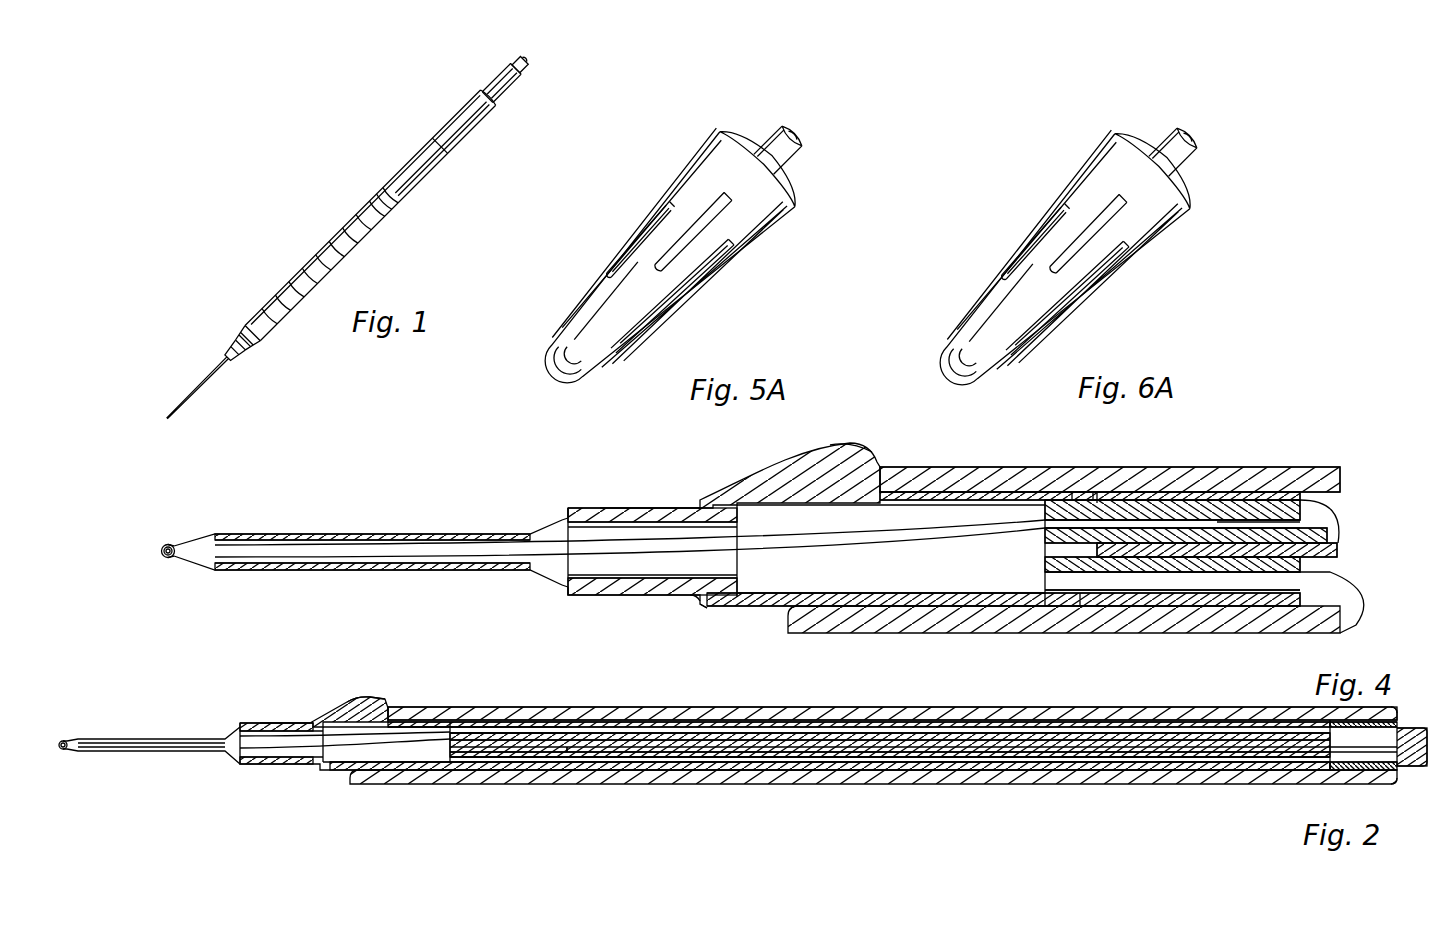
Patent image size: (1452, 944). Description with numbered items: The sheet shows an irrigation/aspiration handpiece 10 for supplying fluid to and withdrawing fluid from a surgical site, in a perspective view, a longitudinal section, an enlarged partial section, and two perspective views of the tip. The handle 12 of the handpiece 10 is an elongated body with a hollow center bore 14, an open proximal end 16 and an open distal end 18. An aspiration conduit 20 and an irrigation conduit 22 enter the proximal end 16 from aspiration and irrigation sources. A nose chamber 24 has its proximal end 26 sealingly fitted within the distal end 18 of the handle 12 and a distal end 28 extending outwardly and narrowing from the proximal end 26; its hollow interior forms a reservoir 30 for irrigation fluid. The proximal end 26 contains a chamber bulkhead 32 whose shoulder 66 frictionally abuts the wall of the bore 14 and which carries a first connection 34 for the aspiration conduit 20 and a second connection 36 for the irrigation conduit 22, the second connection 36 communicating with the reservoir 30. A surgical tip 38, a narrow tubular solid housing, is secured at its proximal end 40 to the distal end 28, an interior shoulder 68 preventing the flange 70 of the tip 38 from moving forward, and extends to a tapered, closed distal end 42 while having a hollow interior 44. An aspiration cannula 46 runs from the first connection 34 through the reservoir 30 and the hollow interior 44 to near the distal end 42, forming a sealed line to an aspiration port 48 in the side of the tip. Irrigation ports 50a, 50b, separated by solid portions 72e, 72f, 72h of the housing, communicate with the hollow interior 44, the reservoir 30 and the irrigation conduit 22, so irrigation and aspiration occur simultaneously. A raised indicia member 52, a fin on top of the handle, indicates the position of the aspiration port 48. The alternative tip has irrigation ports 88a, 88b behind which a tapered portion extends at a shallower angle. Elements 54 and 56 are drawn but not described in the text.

In FIG. 1, the irrigation/aspiration handpiece 10 is at (322, 213).
In FIG. 2, the irrigation/aspiration handpiece 10 is at (628, 684).
In FIG. 1, the handle 12 is at (292, 257).
In FIG. 4, the hollow center bore 14 is at (962, 605).
In FIG. 2, the hollow center bore 14 is at (655, 722).
In FIG. 1, the proximal end 16 is at (495, 103).
In FIG. 2, the proximal end 16 is at (1393, 784).
In FIG. 1, the distal end 18 is at (243, 362).
In FIG. 4, the distal end 18 is at (785, 630).
In FIG. 2, the distal end 18 is at (322, 793).
In FIG. 1, the aspiration conduit 20 is at (528, 62).
In FIG. 4, the aspiration conduit 20 is at (1290, 495).
In FIG. 2, the aspiration conduit 20 is at (1003, 735).
In FIG. 1, the irrigation conduit 22 is at (505, 91).
In FIG. 4, the irrigation conduit 22 is at (1348, 548).
In FIG. 2, the irrigation conduit 22 is at (1050, 740).
In FIG. 1, the nose chamber 24 is at (222, 345).
In FIG. 4, the nose chamber 24 is at (680, 496).
In FIG. 2, the nose chamber 24 is at (322, 697).
In FIG. 4, the proximal end 26 is at (1050, 492).
In FIG. 2, the proximal end 26 is at (450, 727).
In FIG. 4, the distal end 28 is at (608, 505).
In FIG. 2, the distal end 28 is at (252, 722).
In FIG. 4, the reservoir 30 is at (862, 587).
In FIG. 2, the reservoir 30 is at (412, 758).
In FIG. 4, the chamber bulkhead 32 is at (1120, 500).
In FIG. 2, the chamber bulkhead 32 is at (505, 770).
In FIG. 4, the first connection 34 is at (1210, 512).
In FIG. 2, the first connection 34 is at (520, 722).
In FIG. 4, the second connection 36 is at (1150, 580).
In FIG. 2, the second connection 36 is at (535, 777).
In FIG. 1, the surgical tip 38 is at (185, 392).
In FIG. 5A, the surgical tip 38 is at (703, 147).
In FIG. 6A, the surgical tip 38 is at (1085, 152).
In FIG. 4, the surgical tip 38 is at (415, 526).
In FIG. 2, the surgical tip 38 is at (195, 720).
In FIG. 4, the proximal end 40 is at (758, 470).
In FIG. 2, the proximal end 40 is at (336, 775).
In FIG. 5A, the distal end 42 is at (565, 330).
In FIG. 6A, the distal end 42 is at (960, 328).
In FIG. 4, the distal end 42 is at (178, 540).
In FIG. 2, the distal end 42 is at (75, 740).
In FIG. 4, the hollow interior 44 is at (608, 565).
In FIG. 2, the hollow interior 44 is at (268, 760).
In FIG. 5A, the aspiration cannula 46 is at (798, 164).
In FIG. 6A, the aspiration cannula 46 is at (1190, 165).
In FIG. 4, the aspiration cannula 46 is at (535, 533).
In FIG. 5A, the aspiration port 48 is at (592, 386).
In FIG. 6A, the aspiration port 48 is at (990, 386).
In FIG. 4, the aspiration port 48 is at (164, 560).
In FIG. 2, the aspiration port 48 is at (175, 752).
In FIG. 5A, the irrigation port 50a is at (695, 282).
In FIG. 5A, the irrigation port 50b is at (680, 242).
In FIG. 1, the raised indicia member 52 is at (244, 336).
In FIG. 4, the raised indicia member 52 is at (815, 458).
In FIG. 2, the raised indicia member 52 is at (352, 705).
In FIG. 2, the proximal collar 54 is at (1388, 710).
In FIG. 2, the knurled band 56 is at (1315, 733).
In FIG. 4, the shoulder 66 is at (1085, 495).
In FIG. 4, the shoulder 68 is at (704, 606).
In FIG. 4, the flange 70 is at (716, 615).
In FIG. 5A, the solid portion 72e is at (638, 274).
In FIG. 6A, the solid portion 72e is at (1030, 285).
In FIG. 5A, the solid portion 72f is at (660, 224).
In FIG. 6A, the solid portion 72f is at (1055, 225).
In FIG. 5A, the solid portion 72h is at (672, 303).
In FIG. 6A, the solid portion 72h is at (1045, 318).
In FIG. 6A, the irrigation port 88a is at (1075, 297).
In FIG. 6A, the irrigation port 88b is at (1073, 247).